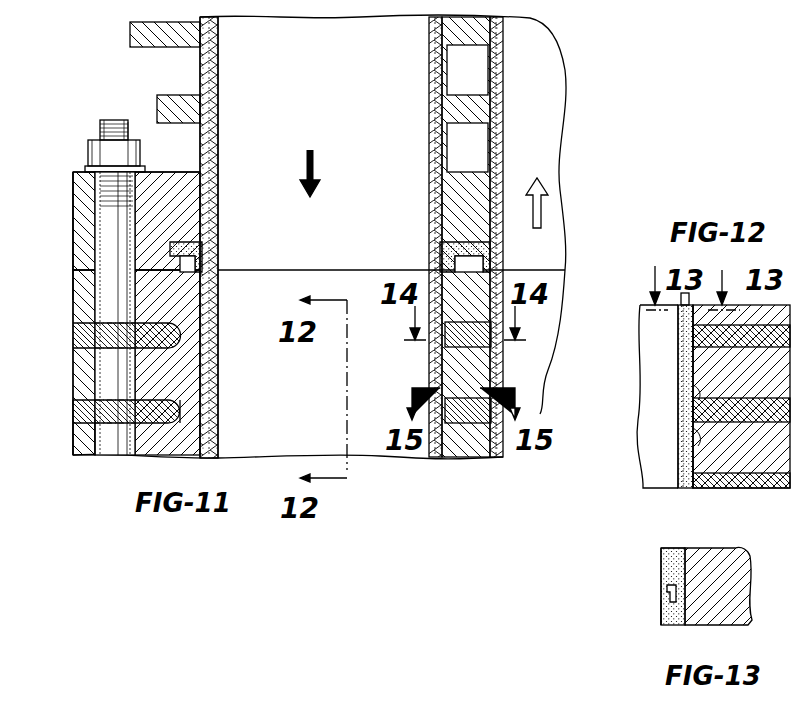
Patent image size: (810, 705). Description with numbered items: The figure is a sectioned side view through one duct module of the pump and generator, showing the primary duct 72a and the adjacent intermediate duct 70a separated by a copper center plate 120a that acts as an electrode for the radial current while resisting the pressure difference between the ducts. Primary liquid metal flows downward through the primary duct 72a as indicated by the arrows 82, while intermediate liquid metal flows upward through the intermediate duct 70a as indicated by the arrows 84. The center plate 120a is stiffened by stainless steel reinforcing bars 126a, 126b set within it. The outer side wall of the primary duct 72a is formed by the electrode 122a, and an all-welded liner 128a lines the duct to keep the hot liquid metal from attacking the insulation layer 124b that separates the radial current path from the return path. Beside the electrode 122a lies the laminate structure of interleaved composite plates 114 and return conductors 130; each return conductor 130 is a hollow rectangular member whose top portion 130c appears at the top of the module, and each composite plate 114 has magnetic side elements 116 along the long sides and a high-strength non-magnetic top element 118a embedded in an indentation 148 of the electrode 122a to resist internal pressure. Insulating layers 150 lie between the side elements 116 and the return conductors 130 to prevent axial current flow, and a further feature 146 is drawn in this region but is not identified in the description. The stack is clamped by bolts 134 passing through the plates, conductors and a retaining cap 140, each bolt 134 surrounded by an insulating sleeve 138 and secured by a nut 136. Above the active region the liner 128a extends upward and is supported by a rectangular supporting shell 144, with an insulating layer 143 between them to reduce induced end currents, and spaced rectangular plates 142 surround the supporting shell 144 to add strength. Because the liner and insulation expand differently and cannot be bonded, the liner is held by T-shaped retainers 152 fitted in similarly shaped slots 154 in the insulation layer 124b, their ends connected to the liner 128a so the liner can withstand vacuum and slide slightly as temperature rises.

In FIG. 11, the rectangularly shaped plate 142 is at (133, 35).
In FIG. 11, the insulating layer 143 is at (207, 58).
In FIG. 11, the supporting shell 144 is at (207, 72).
In FIG. 11, the nut 136 is at (87, 140).
In FIG. 11, the retaining cap 140 is at (73, 192).
In FIG. 11, the slot 146 is at (82, 325).
In FIG. 11, the top portion 130c is at (65, 390).
In FIG. 11, the top element 118a is at (73, 412).
In FIG. 11, the composite plate 114 is at (70, 428).
In FIG. 11, the insulating sleeve 138 is at (95, 457).
In FIG. 11, the bolt 134 is at (113, 458).
In FIG. 11, the indentation 148 is at (182, 424).
In FIG. 11, the primary duct 72a is at (218, 296).
In FIG. 12, the primary duct 72a is at (678, 352).
In FIG. 13, the primary duct 72a is at (658, 558).
In FIG. 11, the liner 128a is at (216, 394).
In FIG. 13, the liner 128a is at (662, 572).
In FIG. 11, the electrode 122a is at (206, 425).
In FIG. 11, the arrows 82 is at (314, 182).
In FIG. 11, the arrows 84 is at (523, 200).
In FIG. 11, the intermediate duct 70a is at (500, 258).
In FIG. 11, the reinforcing bar 126a is at (456, 345).
In FIG. 11, the reinforcing bar 126b is at (478, 423).
In FIG. 11, the center plate 120a is at (452, 458).
In FIG. 12, the insulating layer 150 is at (700, 440).
In FIG. 12, the side element 116 is at (700, 409).
In FIG. 12, the insulation layer 124b is at (690, 422).
In FIG. 13, the insulation layer 124b is at (672, 548).
In FIG. 12, the return conductor 130 is at (752, 383).
In FIG. 13, the return conductor 130 is at (746, 556).
In FIG. 13, the T-shaped retainer 152 is at (668, 598).
In FIG. 13, the slot 154 is at (662, 620).